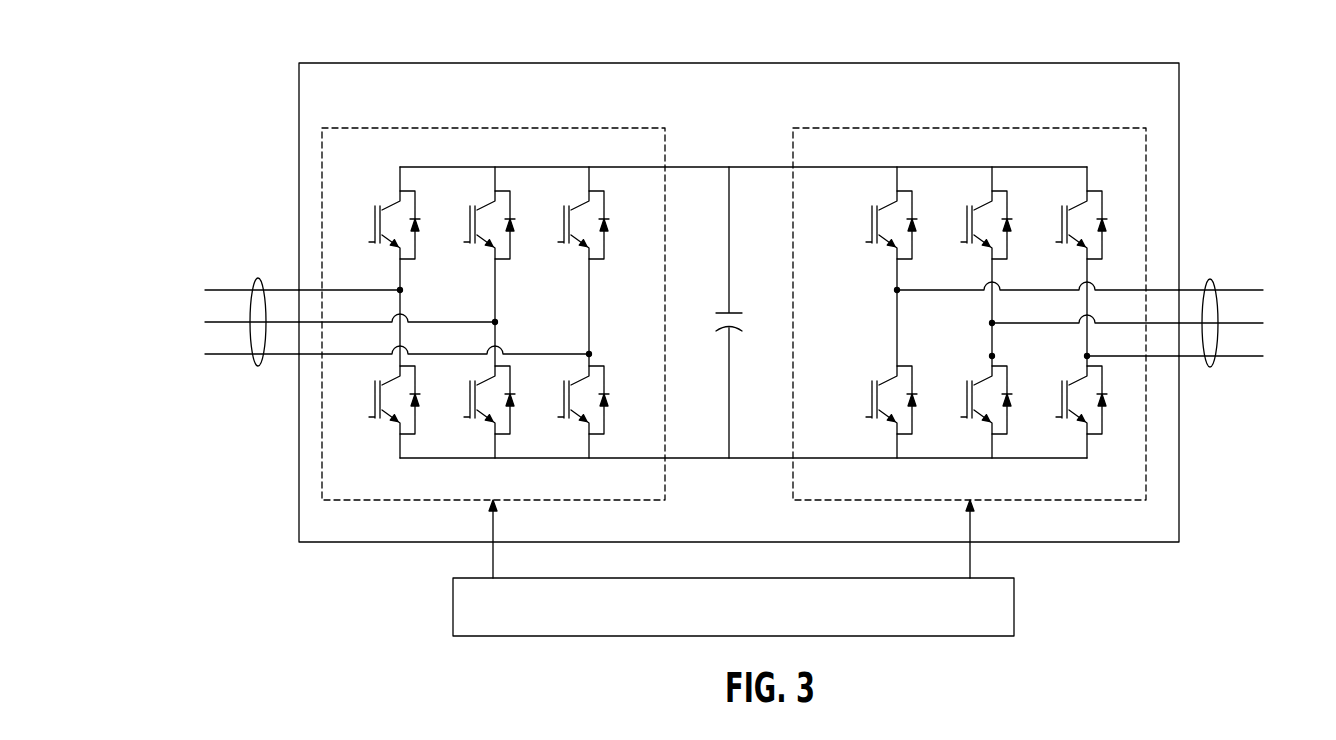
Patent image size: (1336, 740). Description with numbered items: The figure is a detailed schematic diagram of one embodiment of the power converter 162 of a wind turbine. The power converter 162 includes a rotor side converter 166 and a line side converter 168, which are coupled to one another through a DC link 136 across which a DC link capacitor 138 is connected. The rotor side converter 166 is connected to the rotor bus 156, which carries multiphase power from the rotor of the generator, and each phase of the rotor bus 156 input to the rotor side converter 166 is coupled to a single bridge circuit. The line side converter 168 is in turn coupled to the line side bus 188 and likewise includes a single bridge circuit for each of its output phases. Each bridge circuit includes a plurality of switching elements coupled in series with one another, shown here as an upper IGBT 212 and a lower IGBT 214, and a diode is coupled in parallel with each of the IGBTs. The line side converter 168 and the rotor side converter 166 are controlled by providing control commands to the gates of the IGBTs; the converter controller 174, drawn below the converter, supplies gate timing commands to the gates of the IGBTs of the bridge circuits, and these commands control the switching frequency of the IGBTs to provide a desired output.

The power converter 162 is at (818, 63).
The line side converter 168 is at (495, 128).
The rotor side converter 166 is at (986, 293).
The DC link 136 is at (700, 167).
The DC link capacitor 138 is at (732, 313).
The line side bus 188 is at (255, 280).
The rotor bus 156 is at (1209, 280).
The upper IGBT 212 is at (872, 232).
The lower IGBT 214 is at (872, 407).
The converter controller 174 is at (1014, 607).